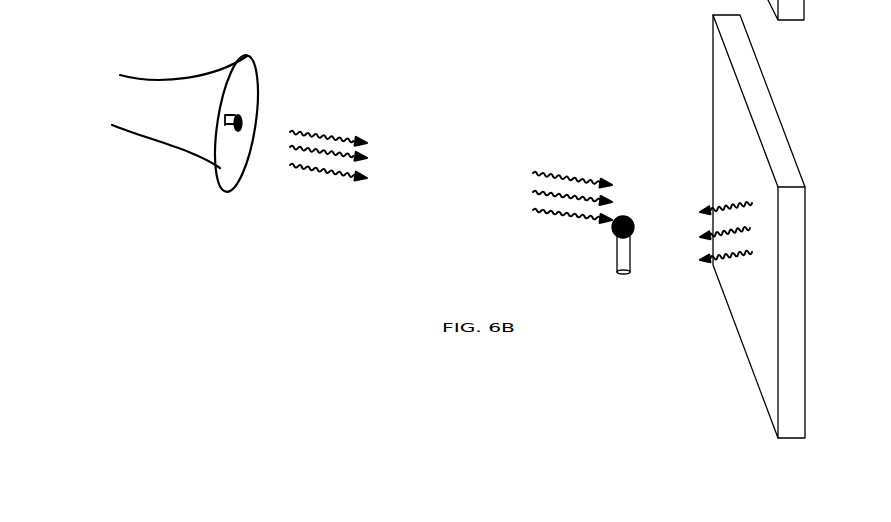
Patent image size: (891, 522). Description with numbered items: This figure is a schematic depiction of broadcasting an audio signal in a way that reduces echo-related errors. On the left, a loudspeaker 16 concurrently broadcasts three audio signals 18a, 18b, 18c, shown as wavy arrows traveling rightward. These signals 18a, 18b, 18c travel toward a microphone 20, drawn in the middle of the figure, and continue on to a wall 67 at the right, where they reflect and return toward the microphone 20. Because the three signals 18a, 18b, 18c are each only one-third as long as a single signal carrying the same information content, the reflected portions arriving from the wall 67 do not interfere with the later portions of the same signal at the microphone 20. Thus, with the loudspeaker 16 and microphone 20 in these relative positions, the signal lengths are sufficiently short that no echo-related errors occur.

The loudspeaker 16 is at (182, 82).
The audio signal 18a is at (337, 137).
The audio signal 18b is at (287, 148).
The audio signal 18c is at (323, 173).
The microphone 20 is at (617, 273).
The wall 67 is at (720, 108).